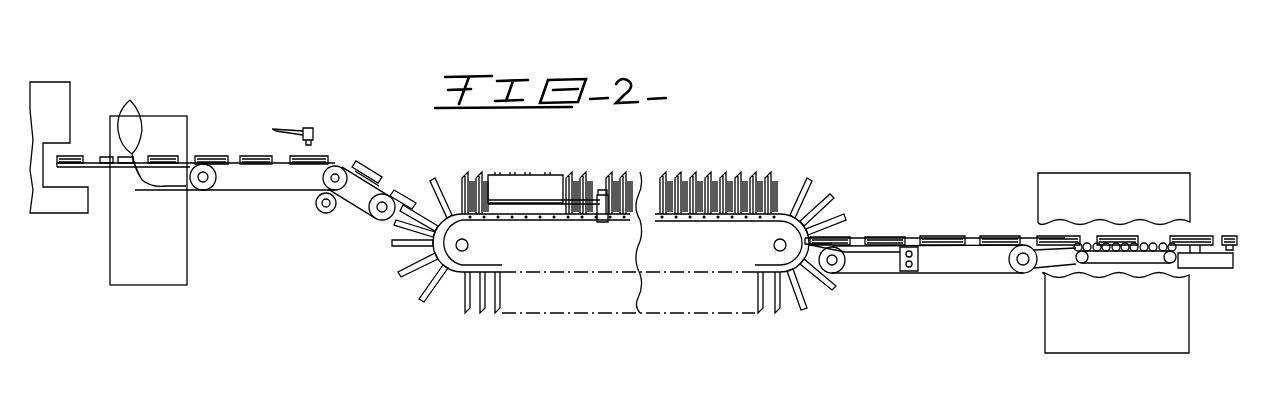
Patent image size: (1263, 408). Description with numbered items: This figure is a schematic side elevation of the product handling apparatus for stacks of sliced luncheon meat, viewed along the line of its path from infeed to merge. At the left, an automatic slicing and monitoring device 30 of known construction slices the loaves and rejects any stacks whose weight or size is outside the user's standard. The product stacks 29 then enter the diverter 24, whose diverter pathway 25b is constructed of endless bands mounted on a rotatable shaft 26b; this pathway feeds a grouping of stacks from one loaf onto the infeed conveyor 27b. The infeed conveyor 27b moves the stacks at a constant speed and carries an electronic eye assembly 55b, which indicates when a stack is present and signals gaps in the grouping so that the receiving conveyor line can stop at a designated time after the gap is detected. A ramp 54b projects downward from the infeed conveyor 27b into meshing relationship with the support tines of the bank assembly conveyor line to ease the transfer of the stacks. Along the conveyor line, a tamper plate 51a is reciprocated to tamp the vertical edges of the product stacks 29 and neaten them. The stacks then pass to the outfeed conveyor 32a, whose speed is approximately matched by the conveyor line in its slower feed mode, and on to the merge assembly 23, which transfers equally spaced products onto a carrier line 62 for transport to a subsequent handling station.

The automatic slicing and monitoring device 30 is at (46, 84).
The diverter pathway 25b is at (130, 111).
The product stacks 29 is at (160, 156).
The diverter 24 is at (156, 262).
The shaft 26b is at (210, 186).
The infeed conveyor 27b is at (265, 194).
The ramp 54b is at (336, 215).
The electronic eye assembly 55b is at (308, 128).
The tamper plate 51a is at (508, 180).
The outfeed conveyor 32a is at (956, 274).
The carrier line 62 is at (1207, 258).
The merge assembly 23 is at (1040, 366).